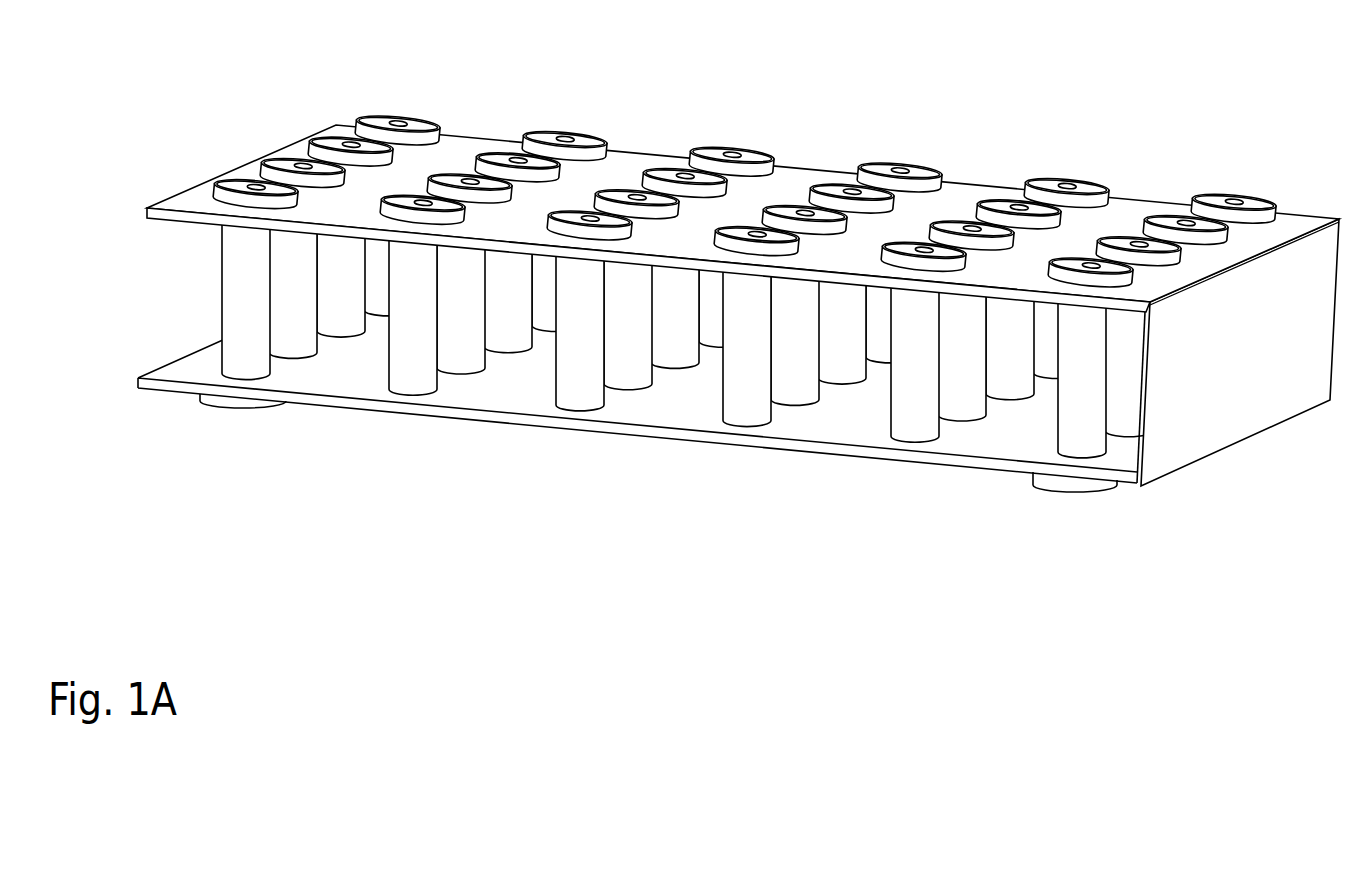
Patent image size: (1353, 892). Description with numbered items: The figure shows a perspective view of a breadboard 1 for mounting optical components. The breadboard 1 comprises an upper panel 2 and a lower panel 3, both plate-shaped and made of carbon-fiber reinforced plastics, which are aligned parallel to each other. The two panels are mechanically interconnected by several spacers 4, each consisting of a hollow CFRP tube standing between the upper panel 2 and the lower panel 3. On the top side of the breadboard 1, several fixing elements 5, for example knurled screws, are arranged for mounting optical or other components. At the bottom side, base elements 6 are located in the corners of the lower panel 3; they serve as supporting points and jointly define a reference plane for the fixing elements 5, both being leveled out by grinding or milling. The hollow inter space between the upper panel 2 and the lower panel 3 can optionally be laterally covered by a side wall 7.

The breadboard 1 is at (949, 105).
The upper panel 2 is at (191, 202).
The lower panel 3 is at (668, 435).
The spacers 4 is at (242, 273).
The fixing elements 5 is at (362, 120).
The base elements 6 is at (242, 405).
The side wall 7 is at (1262, 402).